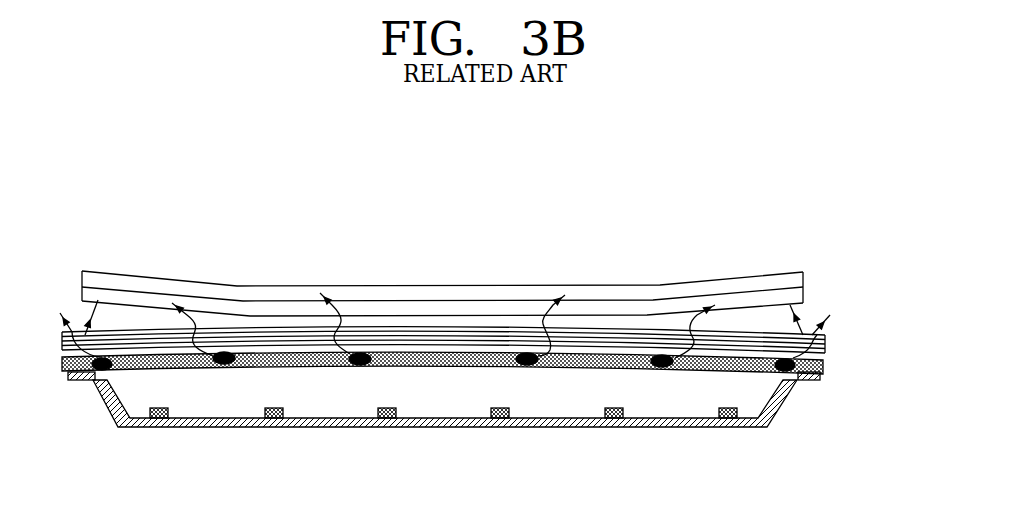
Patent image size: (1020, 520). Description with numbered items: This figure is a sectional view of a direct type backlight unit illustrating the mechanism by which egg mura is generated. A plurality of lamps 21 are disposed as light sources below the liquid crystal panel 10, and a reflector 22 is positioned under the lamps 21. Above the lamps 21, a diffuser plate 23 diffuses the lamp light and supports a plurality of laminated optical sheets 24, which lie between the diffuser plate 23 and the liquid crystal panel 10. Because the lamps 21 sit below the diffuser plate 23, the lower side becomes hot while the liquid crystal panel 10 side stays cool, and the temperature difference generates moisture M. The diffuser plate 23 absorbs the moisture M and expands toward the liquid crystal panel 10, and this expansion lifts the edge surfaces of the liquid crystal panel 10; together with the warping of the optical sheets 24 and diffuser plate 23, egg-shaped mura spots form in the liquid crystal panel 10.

The liquid crystal panel 10 is at (476, 293).
The optical sheets 24 is at (477, 342).
The diffuser plate 23 is at (823, 366).
The moisture M is at (790, 369).
The lamp 21 is at (615, 410).
The reflector 22 is at (678, 420).